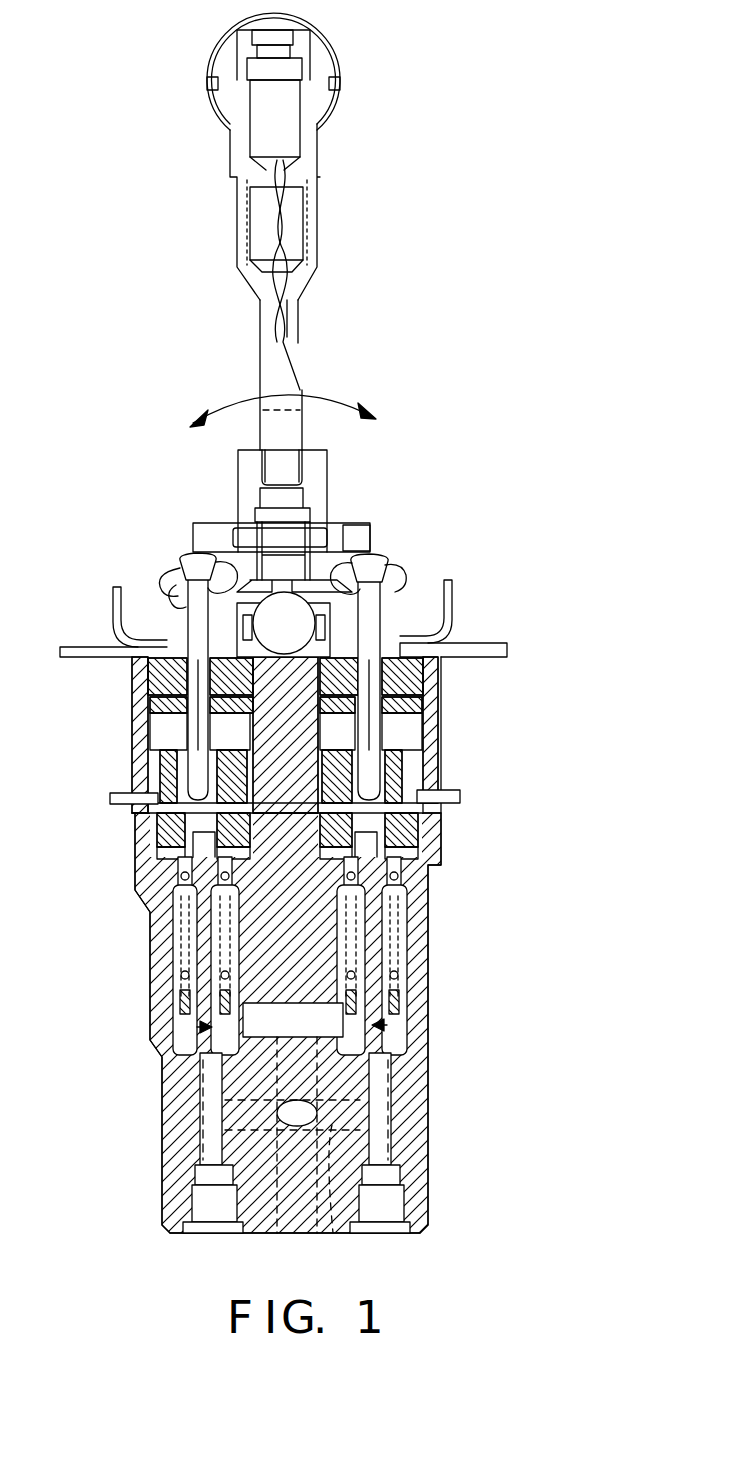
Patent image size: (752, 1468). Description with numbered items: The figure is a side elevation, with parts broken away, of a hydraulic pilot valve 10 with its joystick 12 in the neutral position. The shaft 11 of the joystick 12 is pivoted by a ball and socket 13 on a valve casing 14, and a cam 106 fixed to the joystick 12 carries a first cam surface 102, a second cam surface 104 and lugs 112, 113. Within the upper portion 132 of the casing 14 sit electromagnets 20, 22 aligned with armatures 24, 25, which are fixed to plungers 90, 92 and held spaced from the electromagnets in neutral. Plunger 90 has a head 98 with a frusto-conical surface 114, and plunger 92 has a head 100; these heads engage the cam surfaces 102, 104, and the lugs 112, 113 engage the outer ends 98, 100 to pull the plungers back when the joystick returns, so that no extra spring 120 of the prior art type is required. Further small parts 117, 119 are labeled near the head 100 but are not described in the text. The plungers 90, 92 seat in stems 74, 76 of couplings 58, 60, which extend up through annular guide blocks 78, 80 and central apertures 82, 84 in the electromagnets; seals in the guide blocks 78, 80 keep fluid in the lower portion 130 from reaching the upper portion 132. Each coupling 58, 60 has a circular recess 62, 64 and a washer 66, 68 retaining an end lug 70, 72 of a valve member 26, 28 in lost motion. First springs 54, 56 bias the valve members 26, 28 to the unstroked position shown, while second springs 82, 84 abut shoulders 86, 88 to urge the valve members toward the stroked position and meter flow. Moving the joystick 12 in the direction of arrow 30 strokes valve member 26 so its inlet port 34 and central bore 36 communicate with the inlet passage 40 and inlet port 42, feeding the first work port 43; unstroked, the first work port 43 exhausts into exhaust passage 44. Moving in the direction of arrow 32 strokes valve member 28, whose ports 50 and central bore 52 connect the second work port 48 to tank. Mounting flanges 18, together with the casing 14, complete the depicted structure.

The pilot valve 10 is at (398, 623).
The shaft 11 is at (262, 356).
The joystick 12 is at (303, 303).
The ball and socket 13 is at (300, 636).
The valve casing 14 is at (130, 675).
The mounting flange 18 is at (114, 798).
The electromagnet 20 is at (420, 742).
The electromagnet 22 is at (150, 740).
The armature 24 is at (408, 704).
The armature 25 is at (148, 708).
The valve member 26 is at (392, 1026).
The valve member 28 is at (190, 1027).
The arrow 30 is at (330, 404).
The arrow 32 is at (240, 402).
The inlet port 34 is at (392, 1078).
The central bore 36 is at (392, 1120).
The inlet passage 40 is at (333, 1233).
The inlet port 42 is at (292, 1118).
The first work port 43 is at (382, 1210).
The exhaust passage 44 is at (316, 1033).
The second work port 48 is at (212, 1210).
The ports 50 is at (200, 1078).
The central bore 52 is at (205, 1118).
The first spring 54 is at (400, 914).
The first spring 56 is at (170, 916).
The coupling 58 is at (400, 889).
The coupling 60 is at (165, 870).
The circular recess 62 is at (400, 857).
The circular recess 64 is at (140, 886).
The washer 66 is at (245, 872).
The washer 68 is at (242, 880).
The end lug 70 is at (420, 870).
The end lug 72 is at (152, 852).
The stem 74 is at (480, 755).
The stem 76 is at (96, 758).
The annular guide block 78 is at (410, 822).
The annular guide block 80 is at (152, 824).
The second spring 82 is at (462, 944).
The second spring 84 is at (104, 960).
The shoulder 86 is at (405, 994).
The shoulder 88 is at (180, 992).
The plunger 90 is at (376, 590).
The plunger 92 is at (183, 572).
The head 98 is at (356, 546).
The head 100 is at (182, 558).
The first cam surface 102 is at (398, 574).
The second cam surface 104 is at (200, 583).
The cam 106 is at (224, 528).
The lug 112 is at (329, 528).
The lug 113 is at (196, 602).
The frusto-conical surface 114 is at (382, 566).
The pivot 117 is at (180, 562).
The pivot 119 is at (192, 556).
The spring 120 is at (372, 560).
The lower portion 130 is at (420, 1168).
The upper portion 132 is at (444, 672).